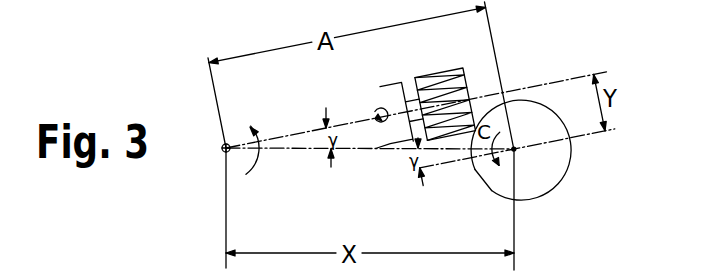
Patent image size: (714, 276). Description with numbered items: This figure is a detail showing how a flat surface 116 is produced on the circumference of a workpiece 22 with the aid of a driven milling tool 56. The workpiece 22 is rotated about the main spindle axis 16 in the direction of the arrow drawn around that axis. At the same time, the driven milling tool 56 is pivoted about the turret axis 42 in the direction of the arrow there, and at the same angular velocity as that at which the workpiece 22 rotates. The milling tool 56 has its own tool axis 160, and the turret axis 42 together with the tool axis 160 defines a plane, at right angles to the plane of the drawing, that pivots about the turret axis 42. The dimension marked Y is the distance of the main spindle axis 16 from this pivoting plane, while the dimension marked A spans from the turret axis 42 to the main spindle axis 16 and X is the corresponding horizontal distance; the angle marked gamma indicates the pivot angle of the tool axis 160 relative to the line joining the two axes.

The turret axis 42 is at (222, 152).
The axis of the milling tool 160 is at (297, 130).
The milling tool 56 is at (443, 82).
The main spindle axis 16 is at (517, 148).
The workpiece 22 is at (557, 170).
The flat surface 116 is at (479, 174).